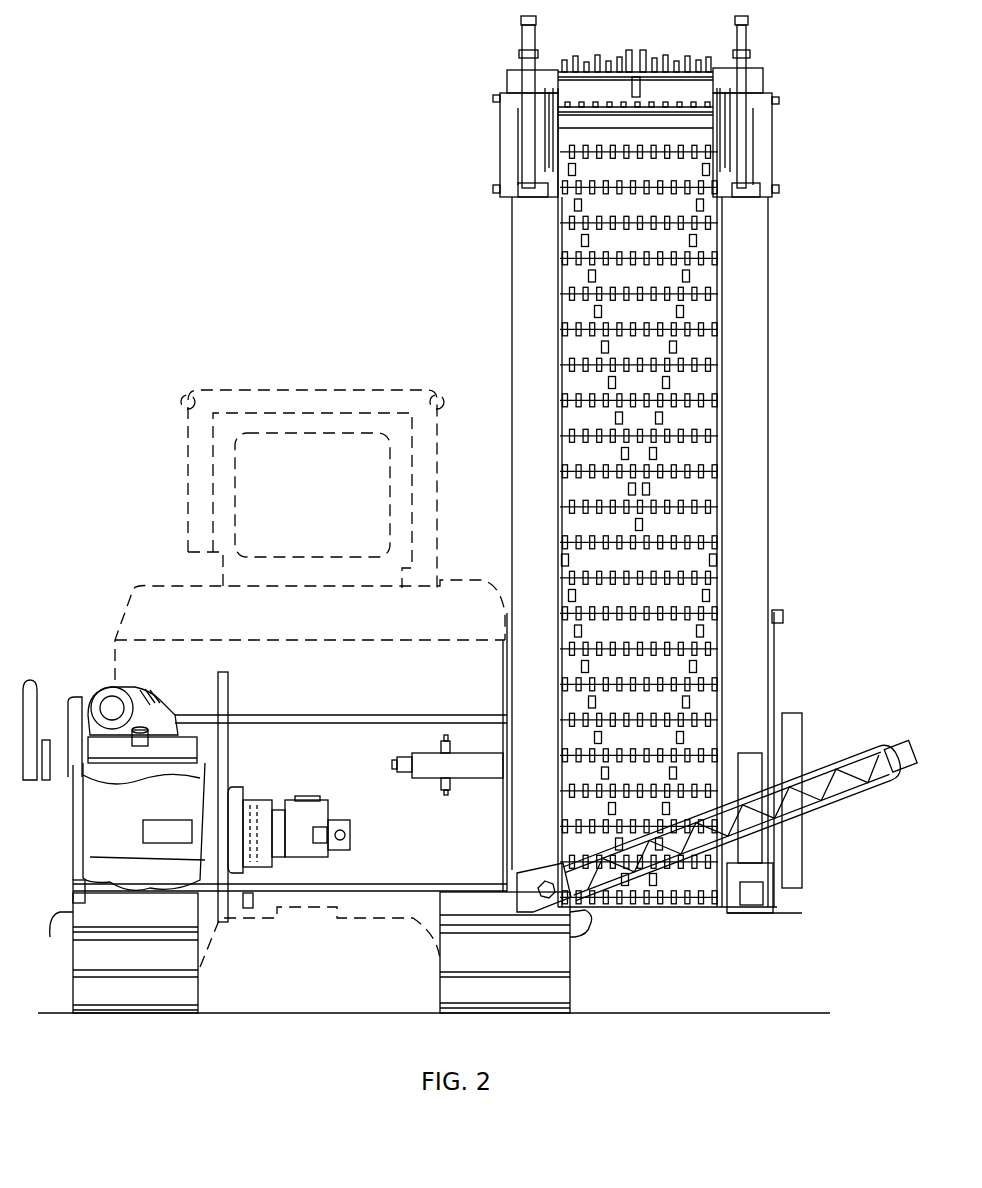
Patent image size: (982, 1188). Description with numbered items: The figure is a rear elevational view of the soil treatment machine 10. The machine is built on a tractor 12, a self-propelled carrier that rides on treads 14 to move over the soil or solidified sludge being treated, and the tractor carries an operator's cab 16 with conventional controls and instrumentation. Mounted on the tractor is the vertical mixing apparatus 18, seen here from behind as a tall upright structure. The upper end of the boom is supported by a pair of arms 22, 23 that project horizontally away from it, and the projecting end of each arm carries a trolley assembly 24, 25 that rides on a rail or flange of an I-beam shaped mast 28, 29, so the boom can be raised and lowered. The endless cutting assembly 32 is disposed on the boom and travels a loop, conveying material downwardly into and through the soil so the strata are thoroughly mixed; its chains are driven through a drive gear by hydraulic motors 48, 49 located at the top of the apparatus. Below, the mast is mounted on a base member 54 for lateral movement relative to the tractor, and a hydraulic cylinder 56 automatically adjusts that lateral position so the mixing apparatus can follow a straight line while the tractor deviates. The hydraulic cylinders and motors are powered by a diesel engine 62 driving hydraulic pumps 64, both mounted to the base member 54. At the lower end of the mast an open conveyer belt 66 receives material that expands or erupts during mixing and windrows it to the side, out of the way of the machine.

The soil treatment machine 10 is at (632, 461).
The tractor 12 is at (118, 620).
The treads 14 is at (80, 955).
The operator's cab 16 is at (186, 517).
The vertical mixing apparatus 18 is at (781, 824).
The arm 22 is at (508, 120).
The arm 23 is at (765, 141).
The trolley assembly 24 is at (508, 197).
The trolley assembly 25 is at (765, 188).
The mast 28 is at (514, 270).
The mast 29 is at (770, 263).
The endless cutting assembly 32 is at (724, 366).
The hydraulic motor 48 is at (522, 146).
The hydraulic motor 49 is at (753, 165).
The base member 54 is at (324, 773).
The hydraulic cylinder 56 is at (467, 772).
The diesel engine 62 is at (77, 740).
The hydraulic pumps 64 is at (315, 853).
The open conveyer belt 66 is at (718, 807).